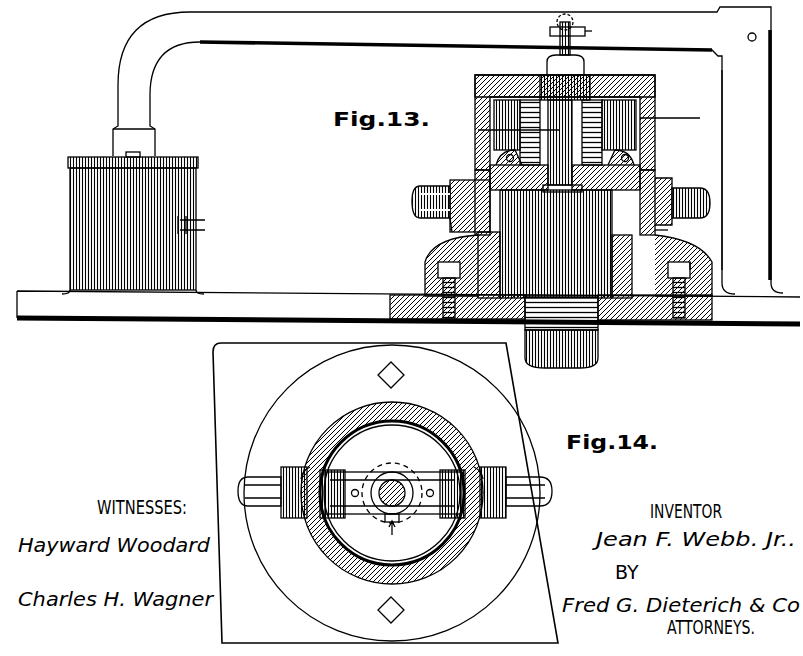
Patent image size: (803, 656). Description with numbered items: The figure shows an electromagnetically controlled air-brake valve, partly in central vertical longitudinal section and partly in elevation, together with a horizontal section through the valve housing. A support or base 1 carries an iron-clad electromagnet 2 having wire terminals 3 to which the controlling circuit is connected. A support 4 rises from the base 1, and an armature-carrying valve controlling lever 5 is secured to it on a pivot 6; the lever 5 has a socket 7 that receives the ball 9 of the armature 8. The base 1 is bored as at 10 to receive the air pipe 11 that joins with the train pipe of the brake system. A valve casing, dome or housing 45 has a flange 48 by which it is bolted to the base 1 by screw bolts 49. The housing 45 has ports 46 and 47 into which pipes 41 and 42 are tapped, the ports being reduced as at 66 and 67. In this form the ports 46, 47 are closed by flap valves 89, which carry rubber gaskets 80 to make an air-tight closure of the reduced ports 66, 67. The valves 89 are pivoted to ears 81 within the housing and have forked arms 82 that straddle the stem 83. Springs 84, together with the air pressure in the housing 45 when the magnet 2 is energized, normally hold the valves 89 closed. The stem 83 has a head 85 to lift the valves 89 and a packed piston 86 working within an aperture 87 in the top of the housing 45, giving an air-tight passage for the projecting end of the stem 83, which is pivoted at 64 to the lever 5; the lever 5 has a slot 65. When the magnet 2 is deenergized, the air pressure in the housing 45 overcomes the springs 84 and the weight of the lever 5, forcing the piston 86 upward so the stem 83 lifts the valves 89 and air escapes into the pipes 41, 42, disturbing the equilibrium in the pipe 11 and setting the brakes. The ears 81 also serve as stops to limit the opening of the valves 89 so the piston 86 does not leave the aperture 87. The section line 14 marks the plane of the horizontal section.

In FIG. 13, the base 1 is at (248, 300).
In FIG. 14, the base 1 is at (385, 493).
In FIG. 13, the electromagnet 2 is at (133, 231).
In FIG. 13, the wire terminals 3 is at (198, 218).
In FIG. 13, the support 4 is at (736, 170).
In FIG. 13, the lever 5 is at (448, 150).
In FIG. 13, the pivot 6 is at (748, 37).
In FIG. 13, the socket 7 is at (133, 145).
In FIG. 13, the armature 8 is at (80, 157).
In FIG. 13, the ball 9 is at (140, 153).
In FIG. 13, the bore 10 is at (600, 321).
In FIG. 14, the bore 10 is at (393, 541).
In FIG. 13, the air pipe 11 is at (598, 353).
In FIG. 14, the air pipe 11 is at (404, 518).
In FIG. 13, the guide pin 14 is at (574, 128).
In FIG. 13, the pipe 41 is at (688, 196).
In FIG. 14, the pipe 41 is at (529, 491).
In FIG. 13, the pipe 42 is at (420, 192).
In FIG. 14, the pipe 42 is at (259, 491).
In FIG. 13, the valve housing 45 is at (478, 76).
In FIG. 14, the valve housing 45 is at (440, 426).
In FIG. 13, the port 46 is at (670, 180).
In FIG. 14, the port 46 is at (496, 481).
In FIG. 13, the port 47 is at (452, 181).
In FIG. 14, the port 47 is at (296, 481).
In FIG. 13, the flange 48 is at (425, 276).
In FIG. 14, the flange 48 is at (392, 493).
In FIG. 13, the screw bolts 49 is at (700, 270).
In FIG. 14, the screw bolts 49 is at (405, 374).
In FIG. 13, the pivot 64 is at (550, 31).
In FIG. 13, the slot 65 is at (592, 31).
In FIG. 13, the reduced port 66 is at (656, 231).
In FIG. 13, the reduced port 67 is at (450, 222).
In FIG. 13, the rubber gaskets 80 is at (438, 266).
In FIG. 13, the ears 81 is at (496, 125).
In FIG. 14, the ears 81 is at (350, 478).
In FIG. 13, the forked arms 82 is at (505, 158).
In FIG. 14, the forked arms 82 is at (420, 480).
In FIG. 13, the stem 83 is at (478, 109).
In FIG. 14, the stem 83 is at (452, 553).
In FIG. 13, the springs 84 is at (476, 85).
In FIG. 13, the head 85 is at (575, 193).
In FIG. 14, the head 85 is at (382, 520).
In FIG. 13, the packed piston 86 is at (584, 73).
In FIG. 13, the aperture 87 is at (542, 78).
In FIG. 13, the flap valves 89 is at (478, 235).
In FIG. 14, the flap valves 89 is at (296, 521).